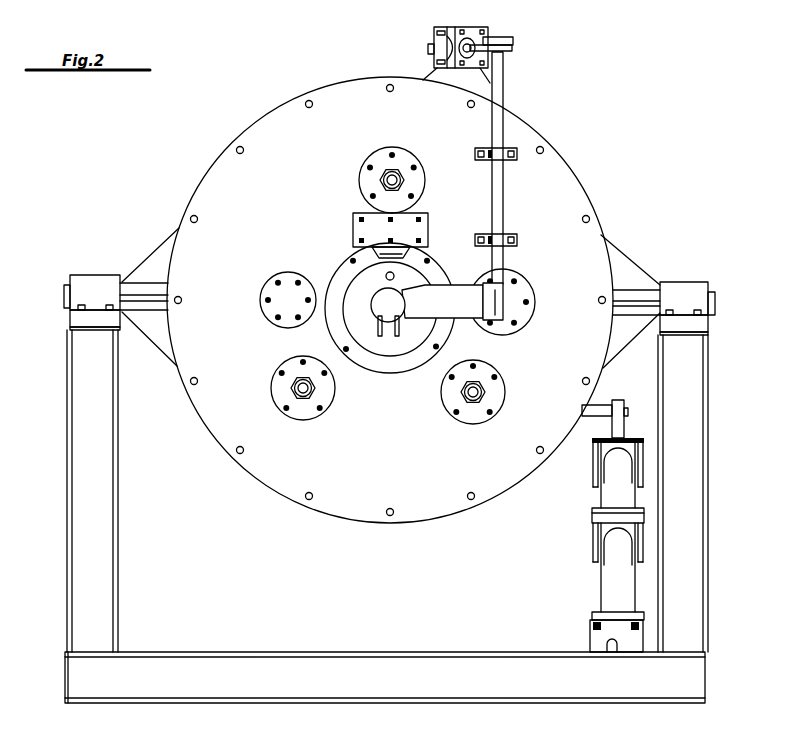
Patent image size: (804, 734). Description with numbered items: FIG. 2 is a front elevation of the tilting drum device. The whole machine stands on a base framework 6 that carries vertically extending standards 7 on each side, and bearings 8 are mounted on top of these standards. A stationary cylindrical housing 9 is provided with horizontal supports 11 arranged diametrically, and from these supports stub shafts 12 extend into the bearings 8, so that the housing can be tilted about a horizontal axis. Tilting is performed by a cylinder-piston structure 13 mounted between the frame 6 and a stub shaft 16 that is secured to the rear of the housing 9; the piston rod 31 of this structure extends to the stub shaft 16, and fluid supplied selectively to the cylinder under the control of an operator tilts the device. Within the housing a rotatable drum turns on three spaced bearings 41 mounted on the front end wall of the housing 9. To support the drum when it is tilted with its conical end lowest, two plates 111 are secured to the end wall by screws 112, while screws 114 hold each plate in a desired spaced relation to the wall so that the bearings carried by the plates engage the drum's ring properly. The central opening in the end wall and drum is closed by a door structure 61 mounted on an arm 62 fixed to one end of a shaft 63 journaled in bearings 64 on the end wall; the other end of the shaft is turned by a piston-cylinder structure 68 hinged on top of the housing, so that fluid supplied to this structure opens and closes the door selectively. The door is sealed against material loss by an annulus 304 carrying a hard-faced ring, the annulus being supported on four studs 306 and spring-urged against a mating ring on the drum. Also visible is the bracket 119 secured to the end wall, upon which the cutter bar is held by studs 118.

The base framework 6 is at (487, 652).
The vertically extending standards 7 is at (67, 503).
The bearings 8 is at (692, 283).
The cylindrical housing 9 is at (214, 158).
The horizontal supports 11 is at (634, 263).
The stub shafts 12 is at (715, 307).
The cylinder-piston structure 13 is at (585, 547).
The stub shaft 16 is at (610, 405).
The piston rod 31 is at (624, 432).
The bearings 41 is at (415, 157).
The door structure 61 is at (404, 342).
The arm 62 is at (460, 320).
The shaft 63 is at (503, 96).
The bearings 64 is at (520, 152).
The piston-cylinder structure 68 is at (442, 43).
The plate 111 is at (265, 306).
The screws 112 is at (277, 279).
The screws 114 is at (299, 322).
The studs 118 is at (408, 244).
The bracket 119 is at (378, 257).
The annulus 304 is at (407, 362).
The studs 306 is at (350, 352).